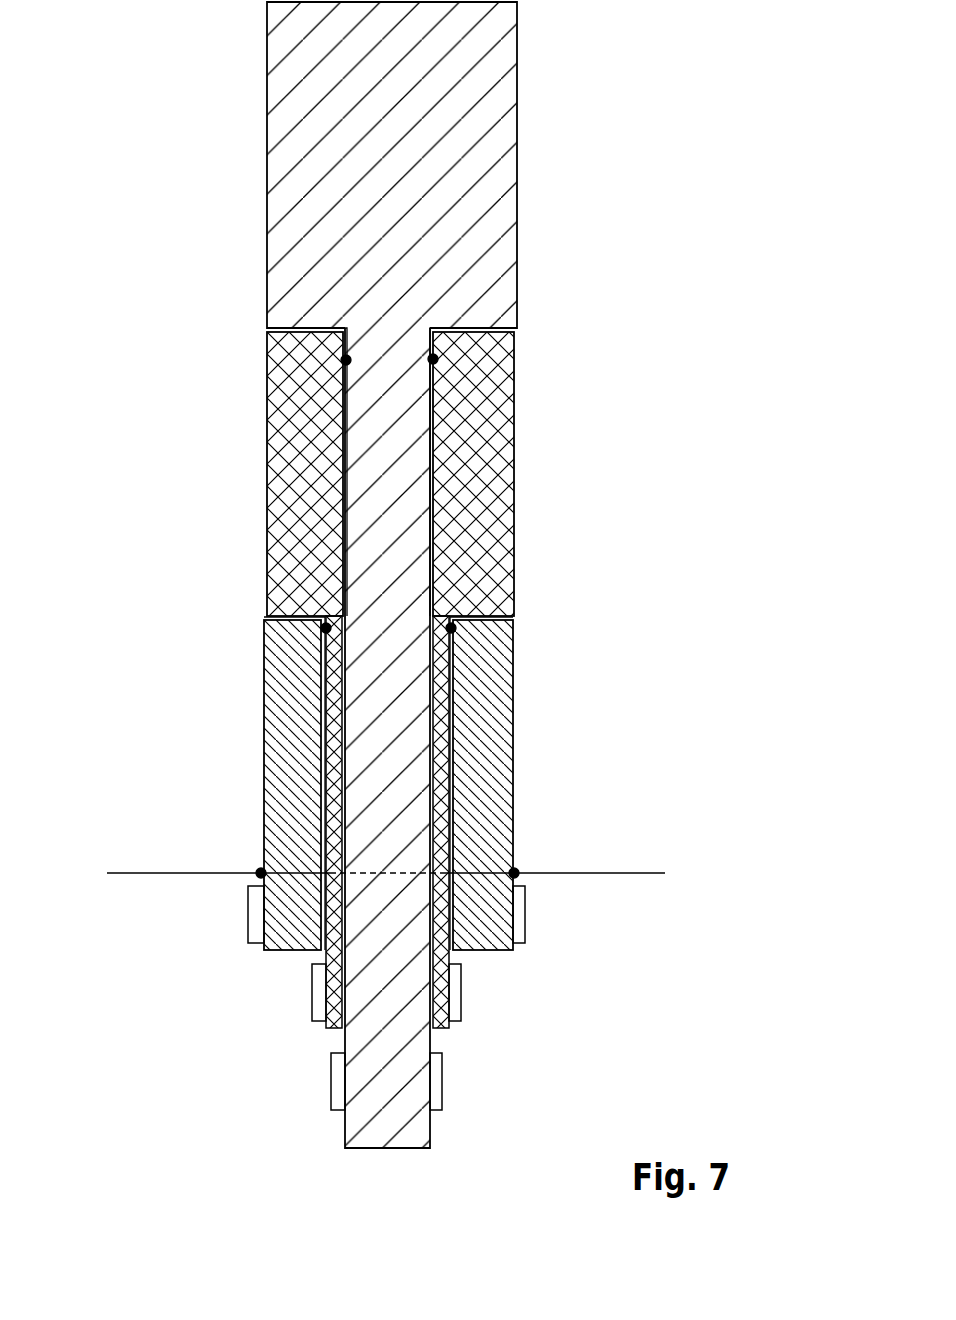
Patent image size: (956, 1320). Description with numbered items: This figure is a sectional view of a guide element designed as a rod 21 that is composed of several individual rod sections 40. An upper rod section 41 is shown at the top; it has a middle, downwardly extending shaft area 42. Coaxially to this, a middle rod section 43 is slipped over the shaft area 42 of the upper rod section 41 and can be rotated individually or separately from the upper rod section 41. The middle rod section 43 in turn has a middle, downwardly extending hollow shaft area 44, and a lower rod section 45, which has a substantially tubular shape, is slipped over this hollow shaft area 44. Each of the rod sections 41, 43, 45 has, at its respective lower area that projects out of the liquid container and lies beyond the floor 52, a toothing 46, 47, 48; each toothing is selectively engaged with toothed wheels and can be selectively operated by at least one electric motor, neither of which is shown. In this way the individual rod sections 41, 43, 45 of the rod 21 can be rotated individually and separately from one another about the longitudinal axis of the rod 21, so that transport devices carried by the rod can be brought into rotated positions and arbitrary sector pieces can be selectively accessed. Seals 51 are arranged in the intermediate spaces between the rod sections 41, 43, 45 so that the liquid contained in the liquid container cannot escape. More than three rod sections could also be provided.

The rod 21 is at (162, 460).
The rod sections 40 is at (540, 177).
The upper rod section 41 is at (470, 160).
The shaft area 42 is at (400, 572).
The middle rod section 43 is at (490, 460).
The hollow shaft area 44 is at (440, 795).
The lower rod section 45 is at (490, 718).
The toothing 46 is at (440, 1083).
The toothing 47 is at (455, 990).
The toothing 48 is at (518, 913).
The seals 51 is at (346, 360).
The floor 52 is at (168, 873).